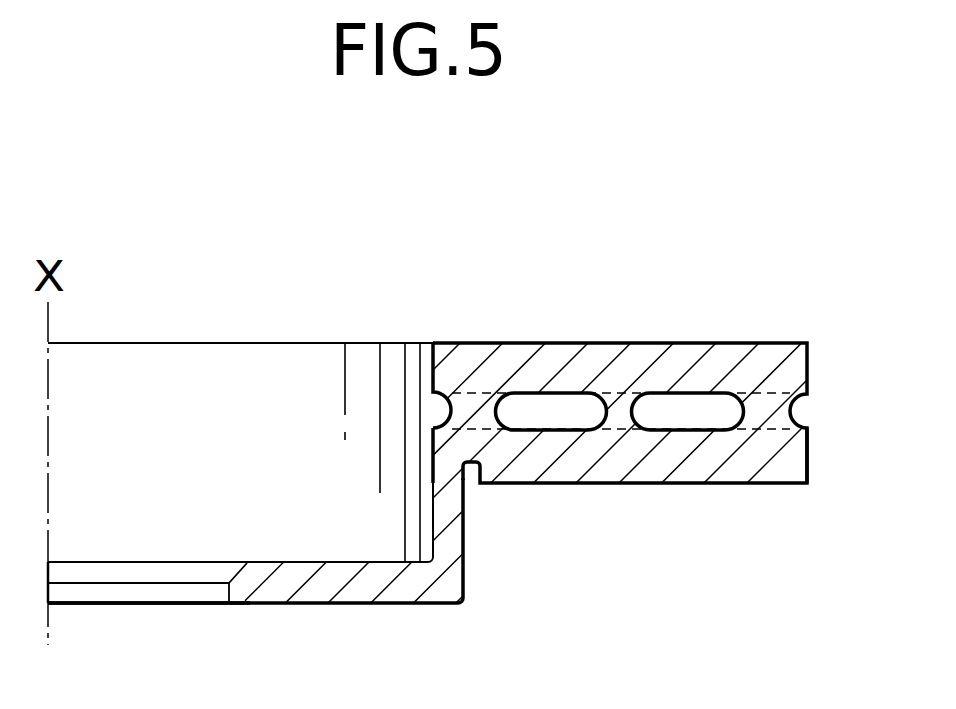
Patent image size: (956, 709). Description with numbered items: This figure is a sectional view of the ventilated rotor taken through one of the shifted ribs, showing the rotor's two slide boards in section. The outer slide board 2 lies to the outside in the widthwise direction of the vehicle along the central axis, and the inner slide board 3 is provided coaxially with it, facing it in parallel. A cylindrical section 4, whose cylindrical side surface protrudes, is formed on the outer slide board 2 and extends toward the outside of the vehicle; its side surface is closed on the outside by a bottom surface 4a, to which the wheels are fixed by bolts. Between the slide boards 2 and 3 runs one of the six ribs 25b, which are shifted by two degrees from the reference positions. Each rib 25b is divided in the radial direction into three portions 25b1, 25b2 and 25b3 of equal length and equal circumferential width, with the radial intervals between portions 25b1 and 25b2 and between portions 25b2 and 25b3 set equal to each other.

The slide board 2 is at (790, 462).
The slide board 3 is at (790, 367).
The cylindrical section 4 is at (455, 553).
The bottom surface 4a is at (378, 597).
The ribs 25b is at (788, 268).
The rib portion 25b1 is at (745, 402).
The rib portion 25b2 is at (620, 405).
The rib portion 25b3 is at (489, 402).